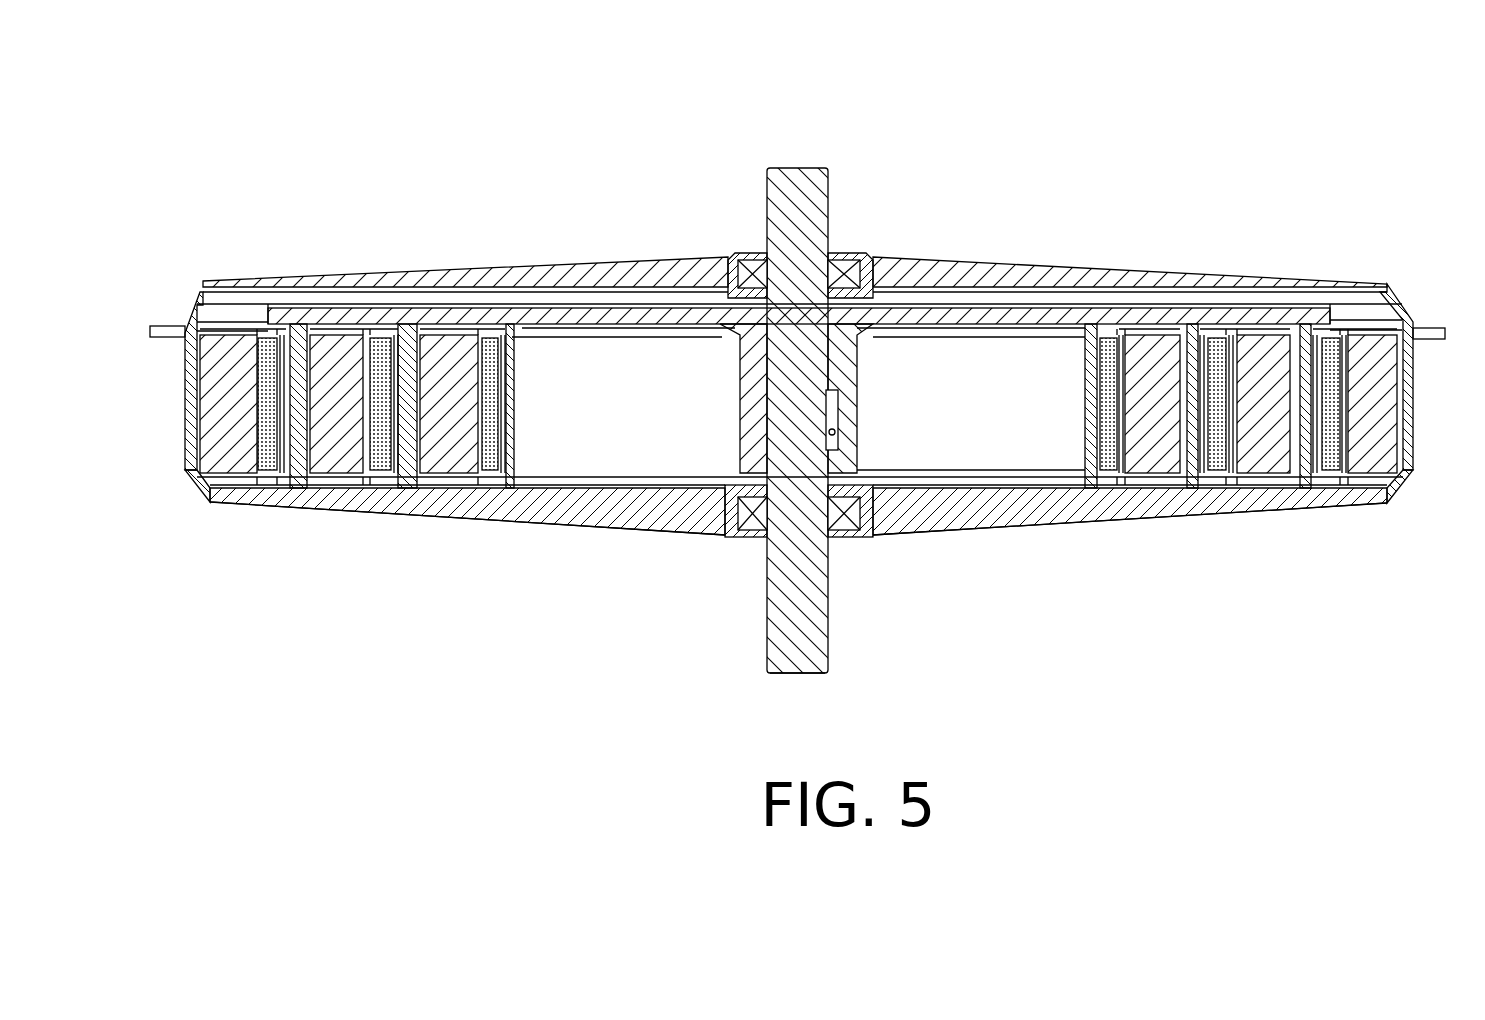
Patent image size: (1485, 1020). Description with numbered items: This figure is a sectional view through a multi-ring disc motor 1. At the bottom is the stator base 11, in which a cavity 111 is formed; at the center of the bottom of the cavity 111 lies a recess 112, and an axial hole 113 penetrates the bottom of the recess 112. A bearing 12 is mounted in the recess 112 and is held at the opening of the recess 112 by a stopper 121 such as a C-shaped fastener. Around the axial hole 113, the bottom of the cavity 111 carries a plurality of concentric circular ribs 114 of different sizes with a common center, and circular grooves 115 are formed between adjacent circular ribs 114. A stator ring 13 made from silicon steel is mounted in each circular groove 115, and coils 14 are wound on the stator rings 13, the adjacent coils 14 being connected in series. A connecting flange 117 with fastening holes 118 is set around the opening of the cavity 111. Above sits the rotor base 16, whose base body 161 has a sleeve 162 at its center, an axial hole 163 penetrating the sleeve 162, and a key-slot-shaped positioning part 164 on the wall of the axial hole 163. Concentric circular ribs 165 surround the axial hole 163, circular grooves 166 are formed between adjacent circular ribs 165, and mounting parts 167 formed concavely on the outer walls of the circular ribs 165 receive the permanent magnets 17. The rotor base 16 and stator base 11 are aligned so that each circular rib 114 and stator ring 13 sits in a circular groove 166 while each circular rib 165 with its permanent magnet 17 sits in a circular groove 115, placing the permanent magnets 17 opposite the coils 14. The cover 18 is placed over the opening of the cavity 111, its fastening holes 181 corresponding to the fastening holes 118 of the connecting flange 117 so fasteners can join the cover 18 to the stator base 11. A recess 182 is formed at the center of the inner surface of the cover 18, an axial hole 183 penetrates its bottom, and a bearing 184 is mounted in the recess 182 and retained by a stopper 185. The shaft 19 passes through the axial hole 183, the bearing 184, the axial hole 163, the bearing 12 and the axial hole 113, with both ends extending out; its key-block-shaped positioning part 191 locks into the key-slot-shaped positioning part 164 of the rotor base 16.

The multi-ring disc motor 1 is at (1206, 526).
The stator base 11 is at (470, 512).
The cavity 111 is at (580, 480).
The recess 112 is at (735, 528).
The axial hole 113 is at (785, 548).
The circular ribs 114 is at (297, 470).
The circular grooves 115 is at (372, 484).
The connecting flange 117 is at (165, 336).
The fastening holes 118 is at (190, 385).
The bearing 12 is at (845, 530).
The stopper 121 is at (852, 470).
The stator rings 13 is at (1406, 470).
The coils 14 is at (1372, 325).
The rotor base 16 is at (1239, 298).
The base body 161 is at (597, 313).
The sleeve 162 is at (845, 450).
The axial hole 163 is at (862, 397).
The key-slot-shaped positioning part 164 is at (850, 445).
The circular ribs 165 is at (487, 350).
The circular grooves 166 is at (375, 330).
The mounting parts 167 is at (240, 330).
The permanent magnets 17 is at (245, 365).
The cover 18 is at (920, 262).
The fastening holes 181 is at (1428, 328).
The recess 182 is at (848, 268).
The axial hole 183 is at (772, 255).
The bearing 184 is at (752, 268).
The stopper 185 is at (735, 292).
The shaft 19 is at (802, 665).
The key-block-shaped positioning part 191 is at (862, 408).